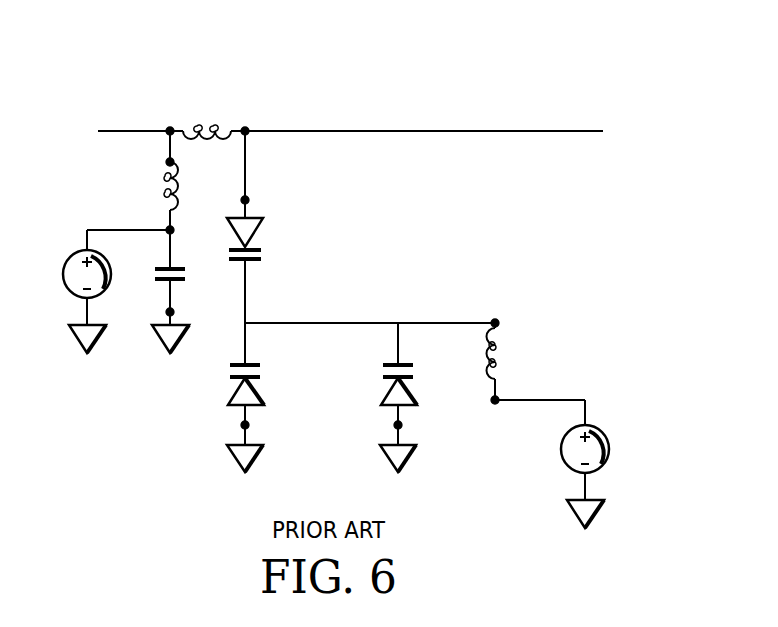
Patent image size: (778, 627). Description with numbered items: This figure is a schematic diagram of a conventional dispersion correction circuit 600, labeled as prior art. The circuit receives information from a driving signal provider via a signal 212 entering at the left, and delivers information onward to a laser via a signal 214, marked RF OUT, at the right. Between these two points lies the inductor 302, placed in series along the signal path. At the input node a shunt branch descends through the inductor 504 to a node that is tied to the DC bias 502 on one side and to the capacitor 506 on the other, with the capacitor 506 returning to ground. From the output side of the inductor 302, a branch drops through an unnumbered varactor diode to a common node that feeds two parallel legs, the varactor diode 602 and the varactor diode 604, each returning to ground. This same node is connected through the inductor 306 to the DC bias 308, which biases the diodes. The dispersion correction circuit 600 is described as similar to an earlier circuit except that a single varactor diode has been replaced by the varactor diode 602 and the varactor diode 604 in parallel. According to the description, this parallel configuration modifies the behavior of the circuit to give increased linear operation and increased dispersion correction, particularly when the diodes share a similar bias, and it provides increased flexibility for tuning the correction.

The dispersion correction circuit 600 is at (660, 52).
The signal 212 is at (121, 133).
The signal 214 is at (553, 133).
The inductor 302 is at (210, 116).
The inductor 504 is at (168, 190).
The capacitor 506 is at (154, 278).
The DC bias 502 is at (62, 290).
The varactor diode 602 is at (229, 378).
The varactor diode 604 is at (383, 378).
The inductor 306 is at (499, 368).
The DC bias 308 is at (562, 452).